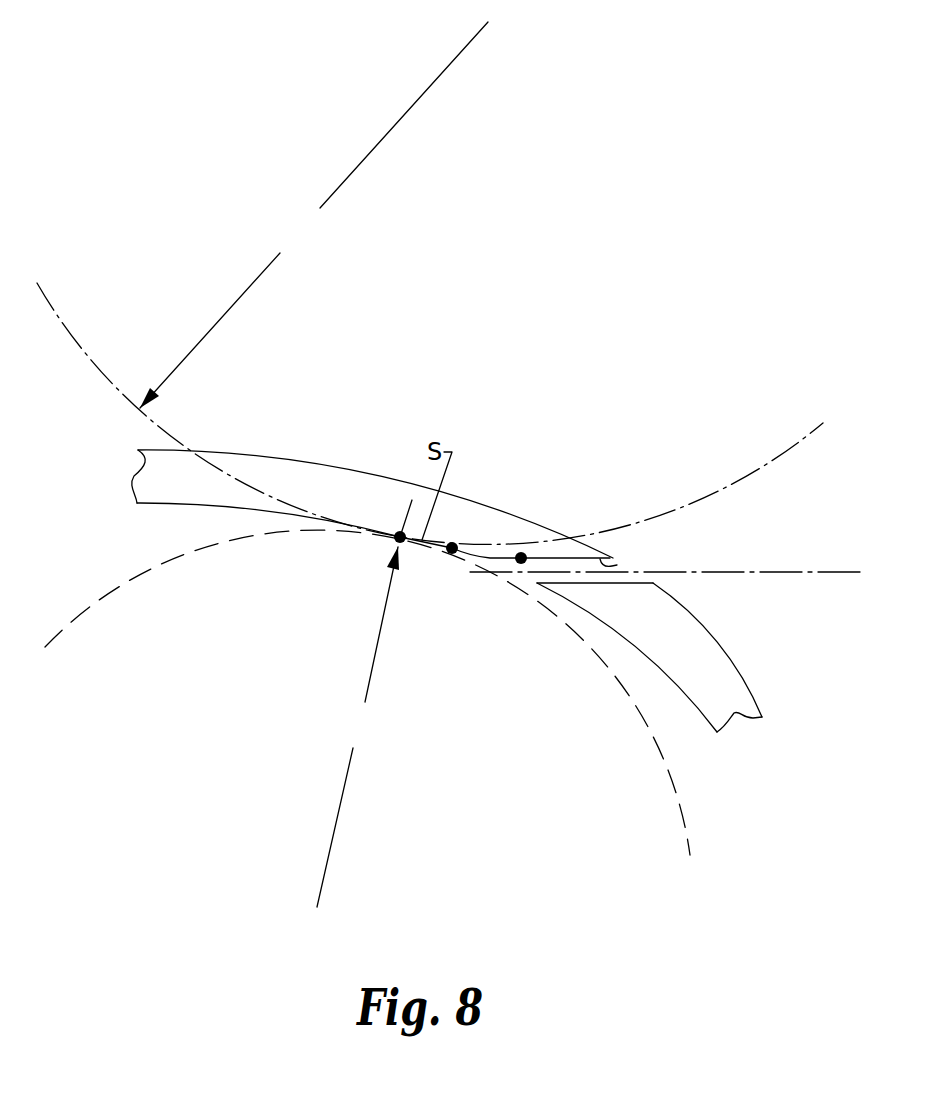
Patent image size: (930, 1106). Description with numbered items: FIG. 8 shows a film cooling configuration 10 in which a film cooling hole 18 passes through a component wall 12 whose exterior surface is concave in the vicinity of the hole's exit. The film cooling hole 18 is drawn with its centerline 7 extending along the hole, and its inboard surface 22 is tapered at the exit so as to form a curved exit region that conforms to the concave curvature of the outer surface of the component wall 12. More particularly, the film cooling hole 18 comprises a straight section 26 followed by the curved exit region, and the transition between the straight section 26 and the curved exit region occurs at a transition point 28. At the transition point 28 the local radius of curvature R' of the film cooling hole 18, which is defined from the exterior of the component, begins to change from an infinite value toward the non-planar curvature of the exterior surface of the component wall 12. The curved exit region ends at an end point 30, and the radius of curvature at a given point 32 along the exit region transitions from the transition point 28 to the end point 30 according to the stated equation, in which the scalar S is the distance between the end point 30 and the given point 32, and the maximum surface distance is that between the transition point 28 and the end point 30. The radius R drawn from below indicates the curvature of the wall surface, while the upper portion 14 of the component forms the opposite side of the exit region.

The blade assembly 10 is at (232, 127).
The upper blade 14 is at (326, 465).
The end point 30 is at (398, 533).
The given point 32 is at (462, 546).
The transition point 28 is at (524, 555).
The inboard surface 22 is at (617, 565).
The centerline 7 is at (770, 572).
The straight section 26 is at (537, 571).
The film cooling hole 18 is at (589, 594).
The component wall 12 is at (725, 662).